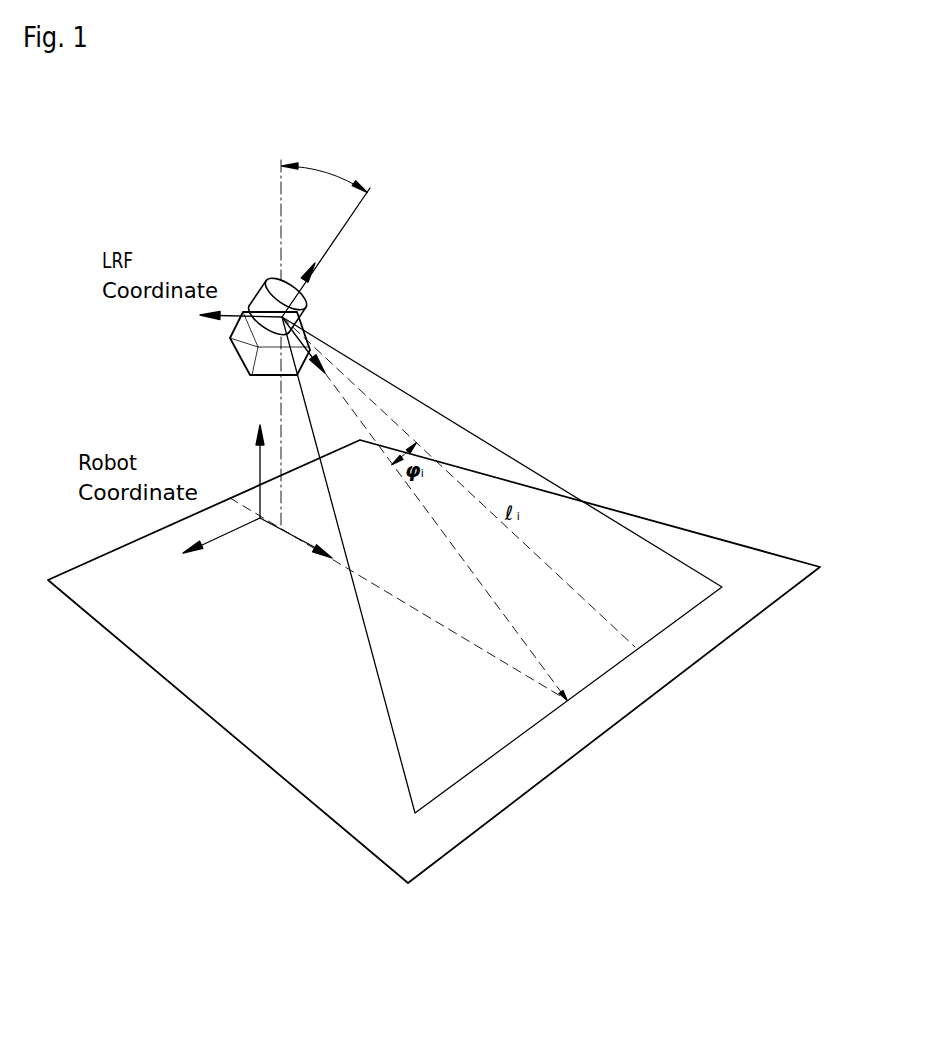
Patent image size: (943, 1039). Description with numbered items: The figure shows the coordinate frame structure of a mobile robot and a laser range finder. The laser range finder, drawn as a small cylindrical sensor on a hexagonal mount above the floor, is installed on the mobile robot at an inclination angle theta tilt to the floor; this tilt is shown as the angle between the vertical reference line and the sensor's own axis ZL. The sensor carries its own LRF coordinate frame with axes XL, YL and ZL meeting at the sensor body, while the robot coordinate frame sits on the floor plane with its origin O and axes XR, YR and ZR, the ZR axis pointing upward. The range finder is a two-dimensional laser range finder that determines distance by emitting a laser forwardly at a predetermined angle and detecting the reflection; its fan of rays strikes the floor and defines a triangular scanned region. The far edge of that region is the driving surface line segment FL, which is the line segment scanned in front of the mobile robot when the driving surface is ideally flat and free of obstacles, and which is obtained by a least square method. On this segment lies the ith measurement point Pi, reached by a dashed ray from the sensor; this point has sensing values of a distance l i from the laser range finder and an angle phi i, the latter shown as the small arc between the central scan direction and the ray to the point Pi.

The driving surface line segment FL is at (523, 733).
The ith measurement point Pi is at (468, 497).
The robot coordinate origin O is at (434, 661).
The robot X axis XR is at (221, 546).
The robot Y axis YR is at (296, 550).
The robot Z axis ZR is at (247, 471).
The LRF X axis XL is at (230, 328).
The LRF Y axis YL is at (306, 362).
The LRF Z axis ZL is at (300, 259).